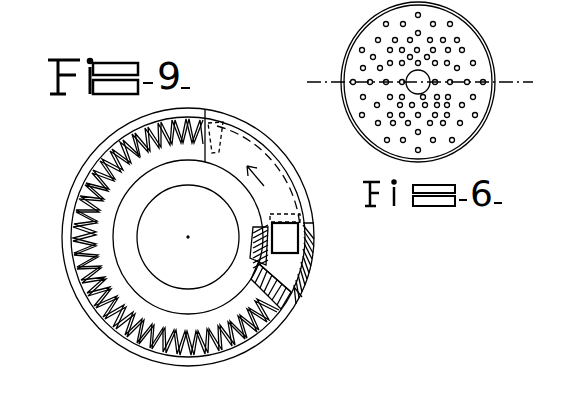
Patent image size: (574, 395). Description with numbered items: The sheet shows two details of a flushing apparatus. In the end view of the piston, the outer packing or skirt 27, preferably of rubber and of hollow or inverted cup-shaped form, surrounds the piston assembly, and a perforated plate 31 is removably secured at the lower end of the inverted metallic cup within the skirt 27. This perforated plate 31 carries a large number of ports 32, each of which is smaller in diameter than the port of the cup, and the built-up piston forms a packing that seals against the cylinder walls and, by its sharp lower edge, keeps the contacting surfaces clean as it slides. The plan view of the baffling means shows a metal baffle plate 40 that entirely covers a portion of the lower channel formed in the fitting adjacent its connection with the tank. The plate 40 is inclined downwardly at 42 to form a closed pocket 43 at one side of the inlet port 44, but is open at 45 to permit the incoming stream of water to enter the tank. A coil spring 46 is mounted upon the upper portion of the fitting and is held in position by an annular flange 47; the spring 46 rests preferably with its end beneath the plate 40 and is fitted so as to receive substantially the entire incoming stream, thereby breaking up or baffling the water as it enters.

In FIG. 6, the outer packing or skirt 27 is at (493, 65).
In FIG. 6, the perforated plate 31 is at (350, 63).
In FIG. 6, the ports 32 is at (473, 48).
In FIG. 9, the baffle plate 40 is at (273, 175).
In FIG. 9, the downwardly inclined portion 42 is at (285, 292).
In FIG. 9, the closed pocket 43 is at (285, 265).
In FIG. 9, the inlet port 44 is at (288, 240).
In FIG. 9, the opening 45 is at (193, 120).
In FIG. 9, the coil spring 46 is at (98, 160).
In FIG. 9, the annular flange 47 is at (142, 305).